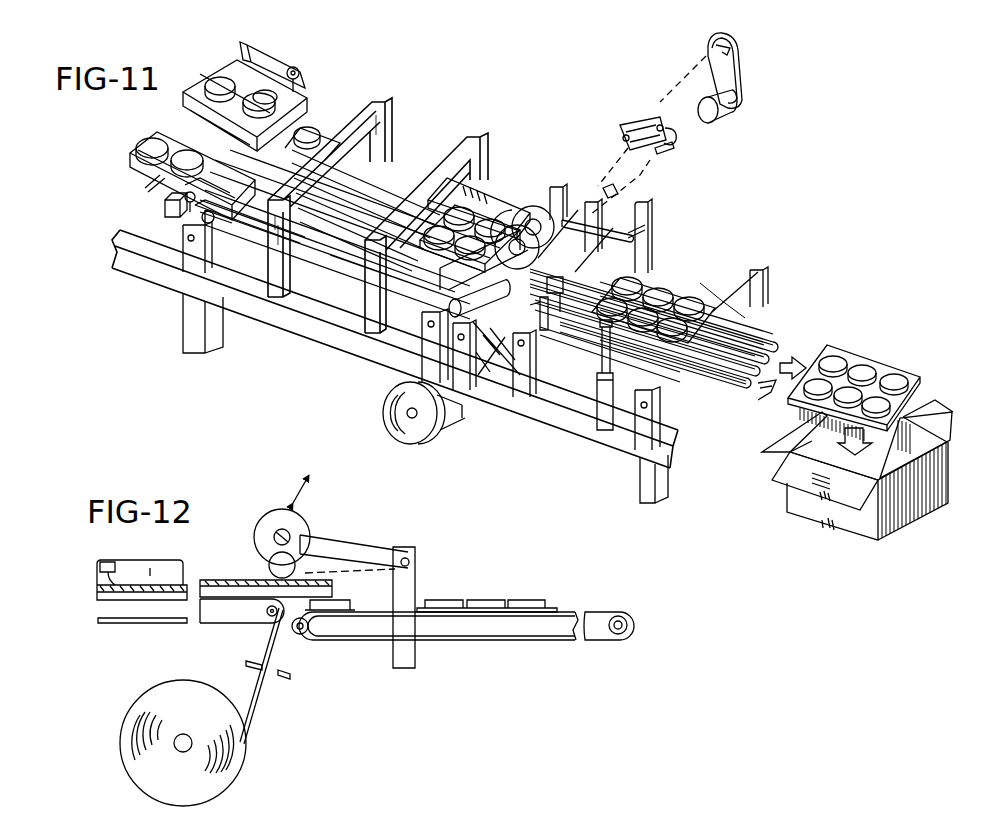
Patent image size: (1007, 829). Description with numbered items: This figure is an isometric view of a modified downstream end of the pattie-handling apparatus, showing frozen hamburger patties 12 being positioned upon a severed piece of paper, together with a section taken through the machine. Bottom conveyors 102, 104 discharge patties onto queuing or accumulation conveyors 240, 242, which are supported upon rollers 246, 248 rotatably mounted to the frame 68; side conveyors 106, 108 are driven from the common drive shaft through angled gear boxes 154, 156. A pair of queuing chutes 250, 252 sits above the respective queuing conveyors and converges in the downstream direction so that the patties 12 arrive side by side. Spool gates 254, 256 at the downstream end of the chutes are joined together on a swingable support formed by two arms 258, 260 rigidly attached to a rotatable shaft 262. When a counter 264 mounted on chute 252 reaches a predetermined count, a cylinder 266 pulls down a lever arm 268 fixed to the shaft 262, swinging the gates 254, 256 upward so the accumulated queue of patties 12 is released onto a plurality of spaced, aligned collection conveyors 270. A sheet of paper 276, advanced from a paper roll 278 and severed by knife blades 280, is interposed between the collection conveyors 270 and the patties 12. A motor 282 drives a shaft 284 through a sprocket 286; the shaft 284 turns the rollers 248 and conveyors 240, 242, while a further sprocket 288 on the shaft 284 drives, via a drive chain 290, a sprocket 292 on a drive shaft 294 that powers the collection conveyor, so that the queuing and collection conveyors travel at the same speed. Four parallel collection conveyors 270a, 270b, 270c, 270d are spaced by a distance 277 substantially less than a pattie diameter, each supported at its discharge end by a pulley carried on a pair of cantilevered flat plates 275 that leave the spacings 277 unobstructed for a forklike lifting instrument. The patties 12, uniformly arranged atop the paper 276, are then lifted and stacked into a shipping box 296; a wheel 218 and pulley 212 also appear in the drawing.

In FIG. 11, the patties 12 is at (633, 338).
In FIG. 12, the patties 12 is at (173, 580).
In FIG. 11, the frame 68 is at (287, 327).
In FIG. 11, the bottom conveyor 102 is at (255, 87).
In FIG. 11, the bottom conveyor 104 is at (188, 219).
In FIG. 11, the side conveyor 106 is at (262, 60).
In FIG. 11, the side conveyor 108 is at (128, 155).
In FIG. 11, the angled gear box 154 is at (307, 103).
In FIG. 11, the angled gear box 156 is at (165, 200).
In FIG. 11, the wheel 218 is at (397, 420).
In FIG. 11, the queuing conveyor 240 is at (490, 188).
In FIG. 11, the queuing conveyor 242 is at (343, 337).
In FIG. 12, the queuing conveyor 242 is at (137, 625).
In FIG. 11, the roller 246 is at (163, 282).
In FIG. 11, the roller 248 is at (440, 303).
In FIG. 12, the roller 248 is at (262, 613).
In FIG. 11, the queuing chute 250 is at (345, 116).
In FIG. 11, the queuing chute 252 is at (353, 240).
In FIG. 11, the spool gate 254 is at (520, 212).
In FIG. 11, the spool gate 256 is at (470, 268).
In FIG. 12, the spool gate 256 is at (257, 563).
In FIG. 11, the arm 258 is at (646, 226).
In FIG. 11, the arm 260 is at (560, 295).
In FIG. 12, the arm 260 is at (333, 543).
In FIG. 11, the rotatable shaft 262 is at (652, 250).
In FIG. 12, the rotatable shaft 262 is at (407, 560).
In FIG. 11, the counter 264 is at (280, 245).
In FIG. 12, the counter 264 is at (107, 560).
In FIG. 11, the cylinder 266 is at (603, 400).
In FIG. 11, the lever arm 268 is at (581, 327).
In FIG. 11, the collection conveyor 270 is at (800, 320).
In FIG. 12, the collection conveyor 270 is at (576, 606).
In FIG. 11, the collection conveyor 270a is at (683, 397).
In FIG. 11, the collection conveyor 270b is at (750, 295).
In FIG. 11, the collection conveyor 270c is at (770, 335).
In FIG. 11, the collection conveyor 270d is at (782, 342).
In FIG. 11, the flat plates 275 is at (658, 360).
In FIG. 12, the flat plates 275 is at (530, 632).
In FIG. 11, the sheet of paper 276 is at (918, 377).
In FIG. 12, the sheet of paper 276 is at (270, 640).
In FIG. 11, the spacing 277 is at (777, 392).
In FIG. 12, the paper roll 278 is at (227, 753).
In FIG. 12, the knife blades 280 is at (274, 678).
In FIG. 11, the motor 282 is at (735, 107).
In FIG. 11, the shaft 284 is at (710, 53).
In FIG. 11, the sprocket 286 is at (737, 44).
In FIG. 11, the sprocket 288 is at (623, 130).
In FIG. 11, the drive chain 290 is at (672, 132).
In FIG. 11, the sprocket 292 is at (673, 155).
In FIG. 11, the drive shaft 294 is at (610, 196).
In FIG. 11, the shipping box 296 is at (917, 417).
In FIG. 12, the pulley 212 is at (307, 632).